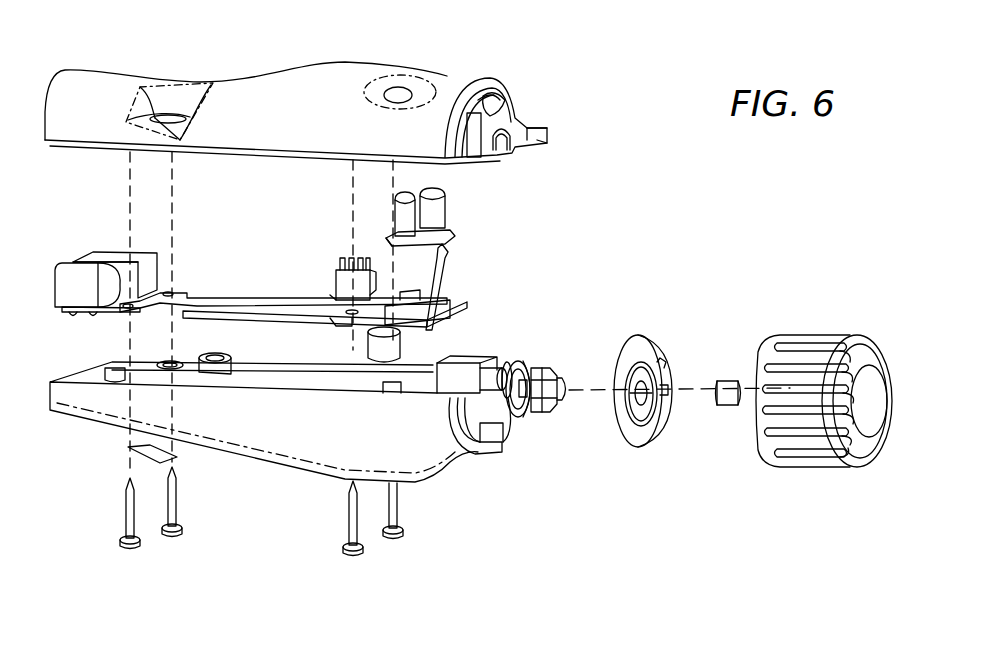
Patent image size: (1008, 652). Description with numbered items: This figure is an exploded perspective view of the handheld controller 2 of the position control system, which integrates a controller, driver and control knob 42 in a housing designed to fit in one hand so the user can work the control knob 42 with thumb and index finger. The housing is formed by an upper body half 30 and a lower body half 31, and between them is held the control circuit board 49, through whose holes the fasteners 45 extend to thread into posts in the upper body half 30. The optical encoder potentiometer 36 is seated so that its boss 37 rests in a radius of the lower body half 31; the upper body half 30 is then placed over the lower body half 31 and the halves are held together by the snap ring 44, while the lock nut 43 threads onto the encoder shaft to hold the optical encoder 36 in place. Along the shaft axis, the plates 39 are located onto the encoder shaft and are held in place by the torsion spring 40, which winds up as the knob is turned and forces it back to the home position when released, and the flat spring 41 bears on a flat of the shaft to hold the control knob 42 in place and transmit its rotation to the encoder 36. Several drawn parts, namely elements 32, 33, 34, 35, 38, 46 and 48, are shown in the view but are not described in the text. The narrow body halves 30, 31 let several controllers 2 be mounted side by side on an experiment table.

The handheld controller 2 is at (480, 41).
The upper body half 30 is at (292, 86).
The lower body half 31 is at (266, 440).
The cover end window 32 is at (490, 100).
The cover tab 33 is at (550, 138).
The sensor element 34 is at (412, 206).
The sensor element 35 is at (442, 201).
The optical encoder potentiometer 36 is at (478, 358).
The boss 37 is at (520, 362).
The nut 38 is at (565, 366).
The plates 39 is at (645, 338).
The torsion spring 40 is at (660, 384).
The flat spring 41 is at (727, 408).
The control knob 42 is at (812, 456).
The lock nut 43 is at (560, 410).
The snap ring 44 is at (520, 438).
The fasteners 45 is at (130, 550).
The clip 46 is at (125, 450).
The mounting plate 48 is at (220, 298).
The control circuit board 49 is at (280, 302).